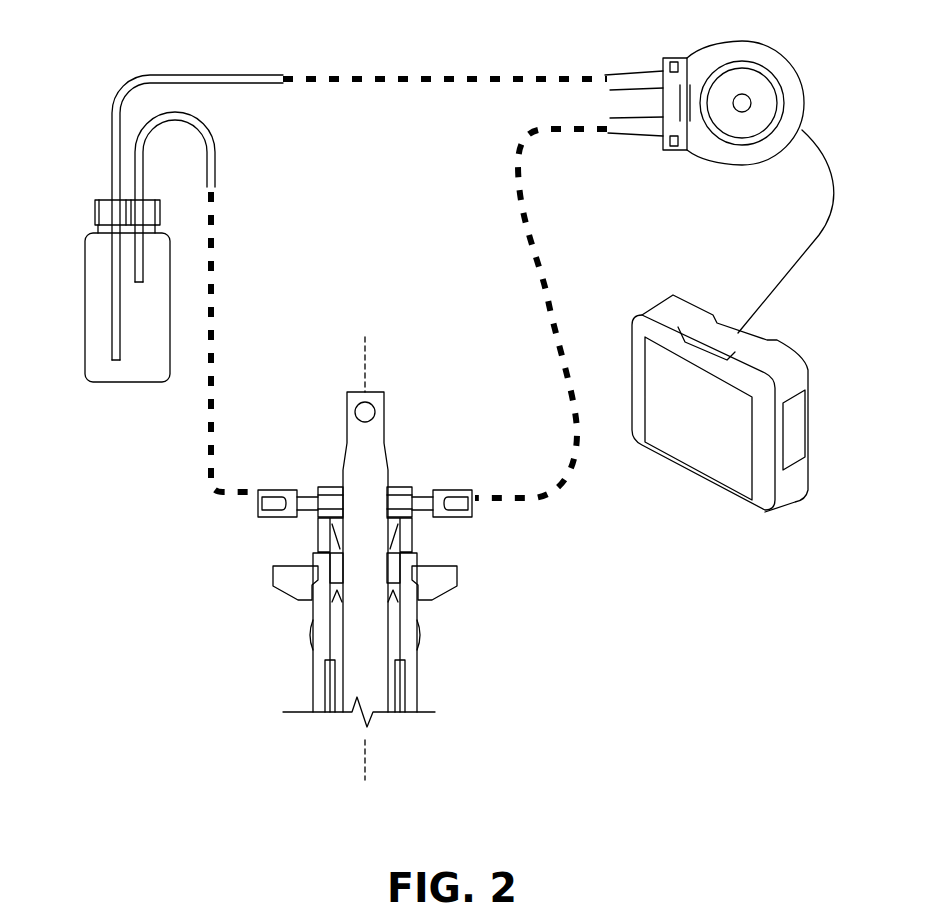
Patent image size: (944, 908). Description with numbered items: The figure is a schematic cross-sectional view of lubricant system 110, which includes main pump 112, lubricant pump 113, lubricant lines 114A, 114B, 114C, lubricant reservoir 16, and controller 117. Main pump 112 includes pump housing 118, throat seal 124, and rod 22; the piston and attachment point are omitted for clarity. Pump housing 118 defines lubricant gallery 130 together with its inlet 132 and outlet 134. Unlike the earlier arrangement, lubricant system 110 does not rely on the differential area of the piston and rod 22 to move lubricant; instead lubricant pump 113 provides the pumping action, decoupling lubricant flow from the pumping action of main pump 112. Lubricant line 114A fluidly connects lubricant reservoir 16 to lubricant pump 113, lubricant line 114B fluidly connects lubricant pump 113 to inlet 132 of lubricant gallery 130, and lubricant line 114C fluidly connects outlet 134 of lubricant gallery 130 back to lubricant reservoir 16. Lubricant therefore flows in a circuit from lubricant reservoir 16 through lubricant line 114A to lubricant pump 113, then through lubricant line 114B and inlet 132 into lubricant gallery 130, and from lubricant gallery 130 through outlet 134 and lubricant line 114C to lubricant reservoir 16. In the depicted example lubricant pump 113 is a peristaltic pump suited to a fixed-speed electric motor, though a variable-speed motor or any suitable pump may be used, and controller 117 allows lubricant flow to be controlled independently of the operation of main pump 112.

The lubricant reservoir 16 is at (85, 297).
The rod 22 is at (372, 392).
The lubricant system 110 is at (669, 550).
The main pump 112 is at (275, 620).
The lubricant pump 113 is at (792, 70).
The lubricant line 114A is at (363, 82).
The lubricant line 114B is at (543, 278).
The lubricant line 114C is at (215, 346).
The controller 117 is at (810, 390).
The pump housing 118 is at (418, 678).
The throat seal 124 is at (323, 577).
The lubricant gallery 130 is at (400, 545).
The inlet 132 is at (453, 490).
The outlet 134 is at (298, 490).